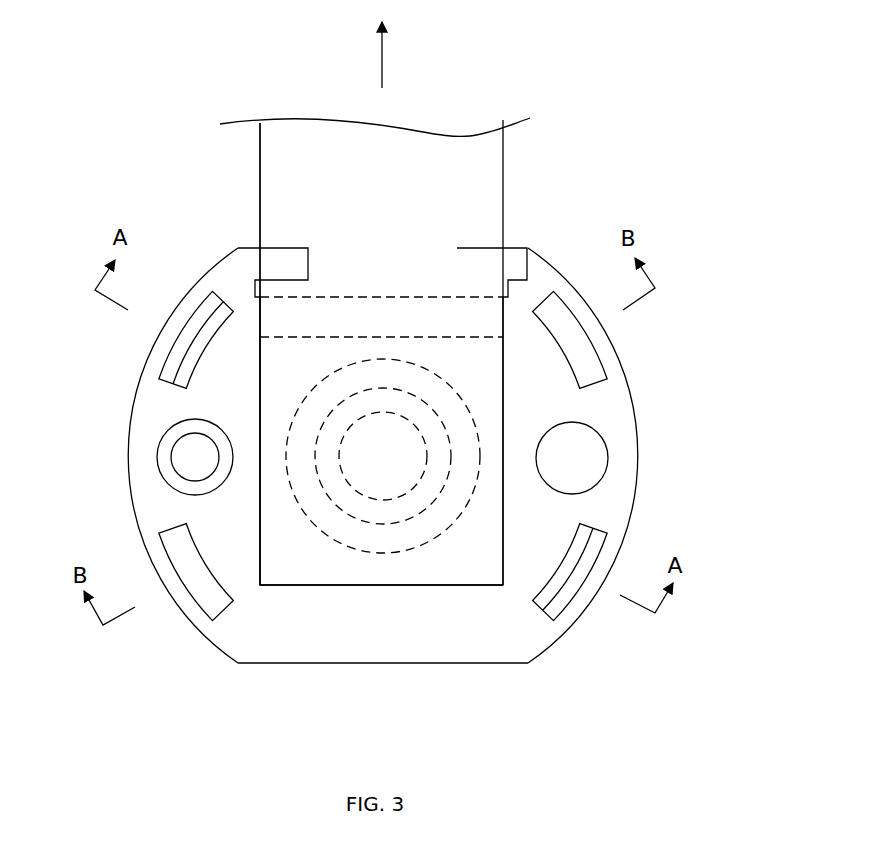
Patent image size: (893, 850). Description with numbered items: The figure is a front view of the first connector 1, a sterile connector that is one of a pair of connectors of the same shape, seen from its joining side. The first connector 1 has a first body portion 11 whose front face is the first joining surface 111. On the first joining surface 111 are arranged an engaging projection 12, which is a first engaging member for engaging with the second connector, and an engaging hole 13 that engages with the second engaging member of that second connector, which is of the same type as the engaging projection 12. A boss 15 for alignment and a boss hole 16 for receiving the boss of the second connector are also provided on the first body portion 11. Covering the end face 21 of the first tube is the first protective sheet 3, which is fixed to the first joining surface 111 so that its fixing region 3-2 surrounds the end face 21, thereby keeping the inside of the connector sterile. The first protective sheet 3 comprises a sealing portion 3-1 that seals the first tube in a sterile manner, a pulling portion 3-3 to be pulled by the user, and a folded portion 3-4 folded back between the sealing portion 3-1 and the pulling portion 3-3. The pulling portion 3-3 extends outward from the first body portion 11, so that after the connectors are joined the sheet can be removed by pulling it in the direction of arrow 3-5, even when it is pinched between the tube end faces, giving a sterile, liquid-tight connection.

The first connector 1 is at (720, 261).
The first protective sheet 3 is at (492, 183).
The sealing portion 3-1 is at (275, 402).
The fixing region 3-2 is at (370, 553).
The pulling portion 3-3 is at (283, 184).
The folded portion 3-4 is at (455, 587).
The arrow 3-5 is at (382, 57).
The first body portion 11 is at (635, 422).
The first joining surface 111 is at (421, 652).
The engaging projection 12 is at (177, 355).
The engaging hole 13 is at (595, 354).
The boss 15 is at (177, 460).
The boss hole 16 is at (597, 457).
The end face 21 is at (335, 505).